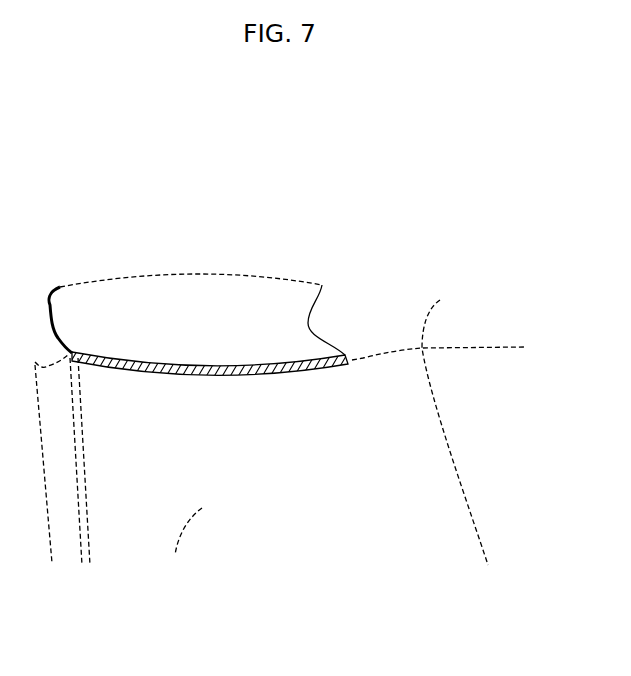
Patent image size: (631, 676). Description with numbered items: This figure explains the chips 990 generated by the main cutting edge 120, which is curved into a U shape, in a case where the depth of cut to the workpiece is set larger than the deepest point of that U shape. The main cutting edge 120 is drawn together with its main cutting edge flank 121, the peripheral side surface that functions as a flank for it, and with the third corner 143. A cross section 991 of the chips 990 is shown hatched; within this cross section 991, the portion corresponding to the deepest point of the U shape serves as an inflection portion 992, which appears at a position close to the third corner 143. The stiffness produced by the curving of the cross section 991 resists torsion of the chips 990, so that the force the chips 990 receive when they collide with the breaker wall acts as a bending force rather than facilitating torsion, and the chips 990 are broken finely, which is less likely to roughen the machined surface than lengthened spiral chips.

The chips 990 is at (90, 302).
The cross section 991 is at (180, 367).
The inflection portion 992 is at (278, 370).
The main cutting edge 120 is at (367, 360).
The main cutting edge flank 121 is at (178, 550).
The third corner 143 is at (455, 426).